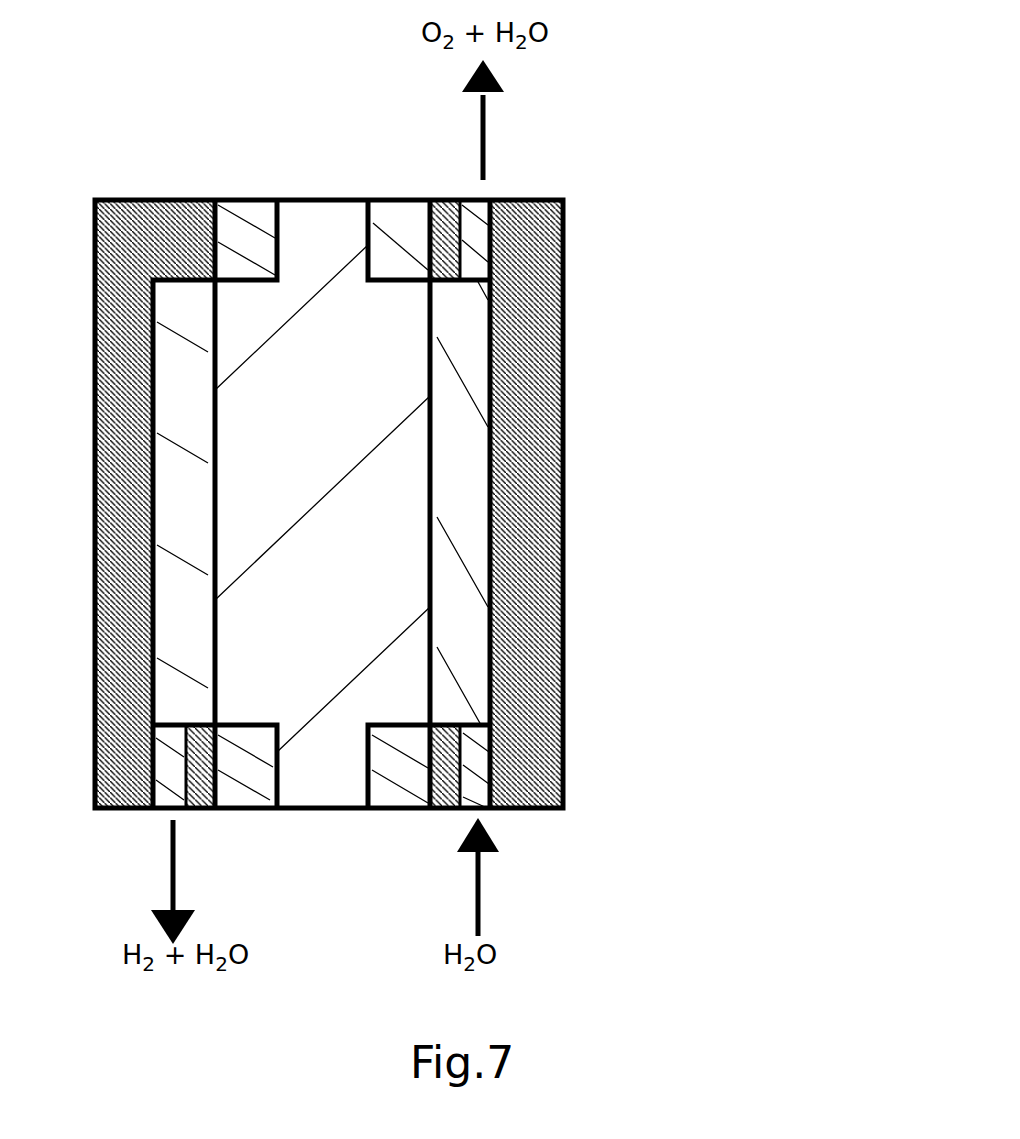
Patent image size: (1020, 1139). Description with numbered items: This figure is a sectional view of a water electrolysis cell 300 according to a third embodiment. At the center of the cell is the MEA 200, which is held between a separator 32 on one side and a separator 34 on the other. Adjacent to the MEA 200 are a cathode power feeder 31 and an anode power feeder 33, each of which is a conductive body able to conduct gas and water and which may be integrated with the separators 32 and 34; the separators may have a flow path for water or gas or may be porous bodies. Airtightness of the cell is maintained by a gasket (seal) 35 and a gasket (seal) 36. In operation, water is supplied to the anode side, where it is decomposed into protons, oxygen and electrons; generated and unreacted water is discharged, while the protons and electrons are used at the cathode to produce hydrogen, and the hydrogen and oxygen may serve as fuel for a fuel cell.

The water electrolysis cell 300 is at (681, 222).
The MEA 200 is at (313, 225).
The cathode power feeder 31 is at (178, 317).
The separator 32 is at (122, 278).
The anode power feeder 33 is at (453, 318).
The separator 34 is at (534, 290).
The gasket (seal) 35 is at (234, 790).
The gasket (seal) 36 is at (386, 780).